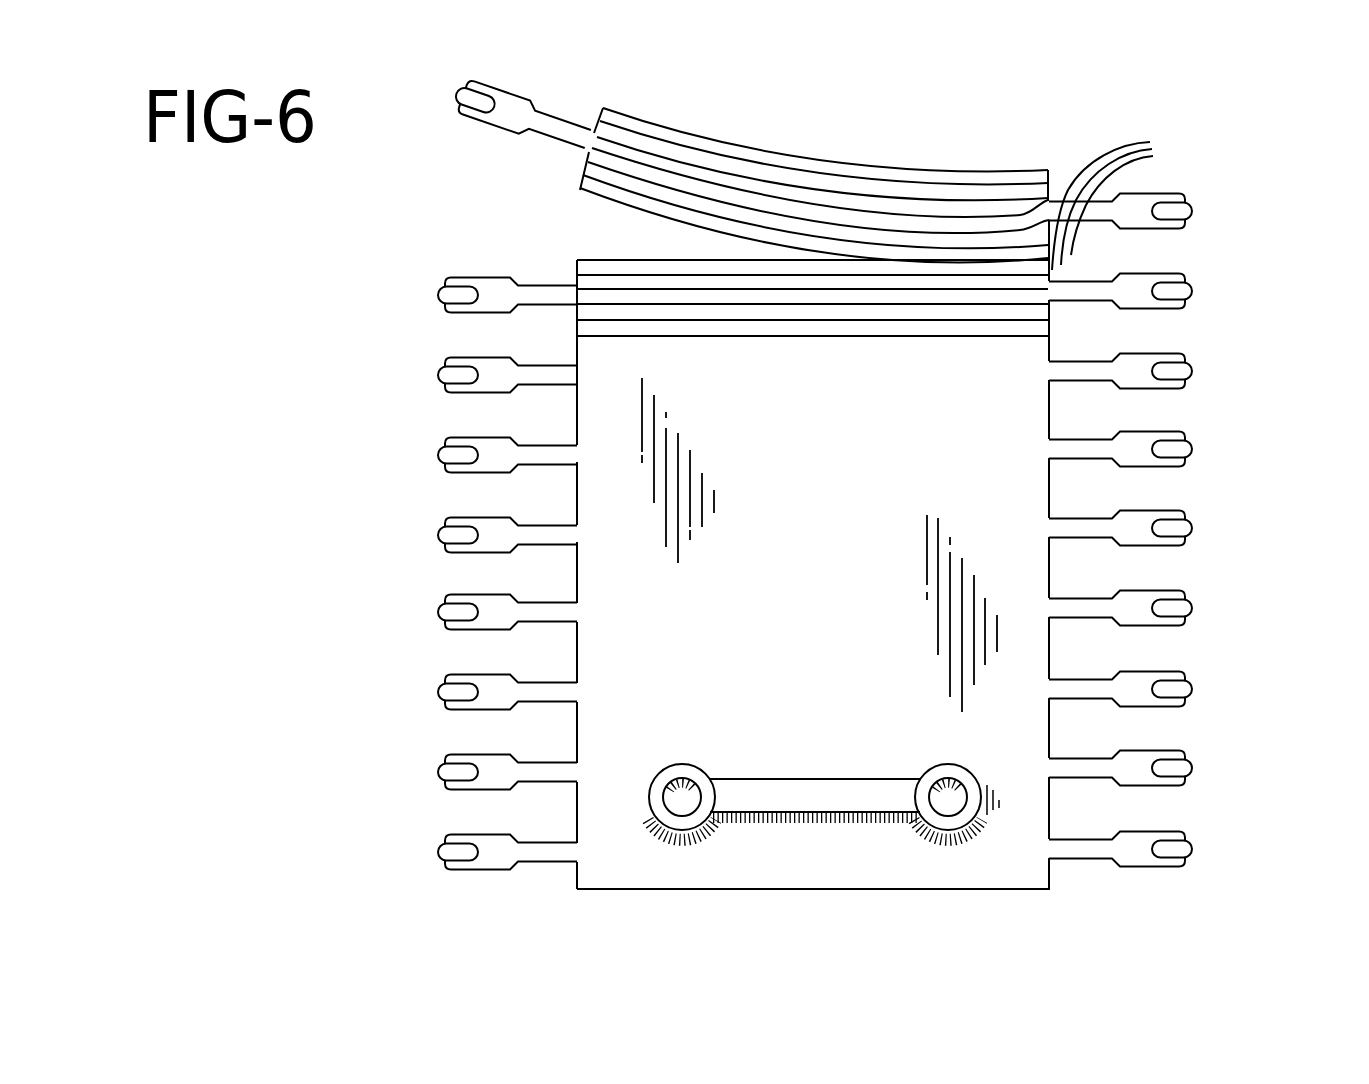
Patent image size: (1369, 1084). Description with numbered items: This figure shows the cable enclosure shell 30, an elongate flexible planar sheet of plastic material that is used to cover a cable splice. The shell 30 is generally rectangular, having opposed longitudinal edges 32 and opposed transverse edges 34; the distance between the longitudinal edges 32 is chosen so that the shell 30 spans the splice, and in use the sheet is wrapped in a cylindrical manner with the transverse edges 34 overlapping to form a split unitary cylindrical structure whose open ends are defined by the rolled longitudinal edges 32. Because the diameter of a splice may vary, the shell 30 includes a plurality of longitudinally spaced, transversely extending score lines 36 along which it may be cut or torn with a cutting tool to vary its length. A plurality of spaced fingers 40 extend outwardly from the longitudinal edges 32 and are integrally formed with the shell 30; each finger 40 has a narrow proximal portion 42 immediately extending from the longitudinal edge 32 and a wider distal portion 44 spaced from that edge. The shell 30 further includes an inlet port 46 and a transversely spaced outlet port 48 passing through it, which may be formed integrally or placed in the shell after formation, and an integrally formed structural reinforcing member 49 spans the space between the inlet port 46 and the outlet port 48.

The cable enclosure shell 30 is at (1232, 480).
The longitudinal edges 32 is at (577, 490).
The transverse edges 34 is at (962, 169).
The score lines 36 is at (1119, 203).
The fingers 40 is at (528, 622).
The narrow proximal portion 42 is at (1078, 769).
The wider distal portion 44 is at (493, 848).
The inlet port 46 is at (662, 801).
The outlet port 48 is at (928, 801).
The structural reinforcing member 49 is at (775, 800).